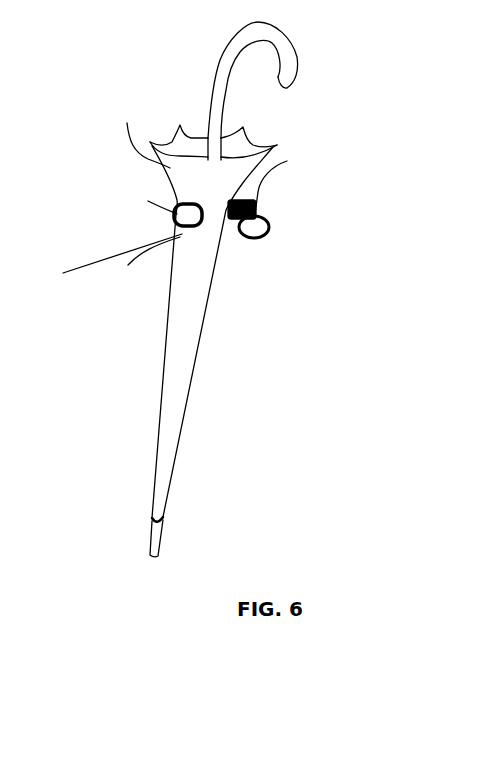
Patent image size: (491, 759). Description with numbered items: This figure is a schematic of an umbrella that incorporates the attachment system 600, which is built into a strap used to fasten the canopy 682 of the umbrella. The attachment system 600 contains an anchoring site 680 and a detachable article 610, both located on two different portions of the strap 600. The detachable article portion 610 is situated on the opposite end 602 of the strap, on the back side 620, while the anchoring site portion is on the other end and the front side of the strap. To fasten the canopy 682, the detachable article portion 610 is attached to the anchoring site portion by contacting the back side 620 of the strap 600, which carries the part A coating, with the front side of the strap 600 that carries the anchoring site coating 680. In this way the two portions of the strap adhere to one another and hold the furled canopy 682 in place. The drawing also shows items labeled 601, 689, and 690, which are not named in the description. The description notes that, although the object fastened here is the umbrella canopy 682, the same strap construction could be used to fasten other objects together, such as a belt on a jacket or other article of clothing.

The attachment system 600 is at (280, 198).
The body 601 is at (146, 264).
The opposite end 602 is at (249, 238).
The detachable article 610 is at (282, 180).
The back side 620 is at (262, 219).
The anchoring site 680 is at (175, 218).
The canopy 682 is at (137, 130).
The strap 689 is at (105, 264).
The clip 690 is at (152, 200).